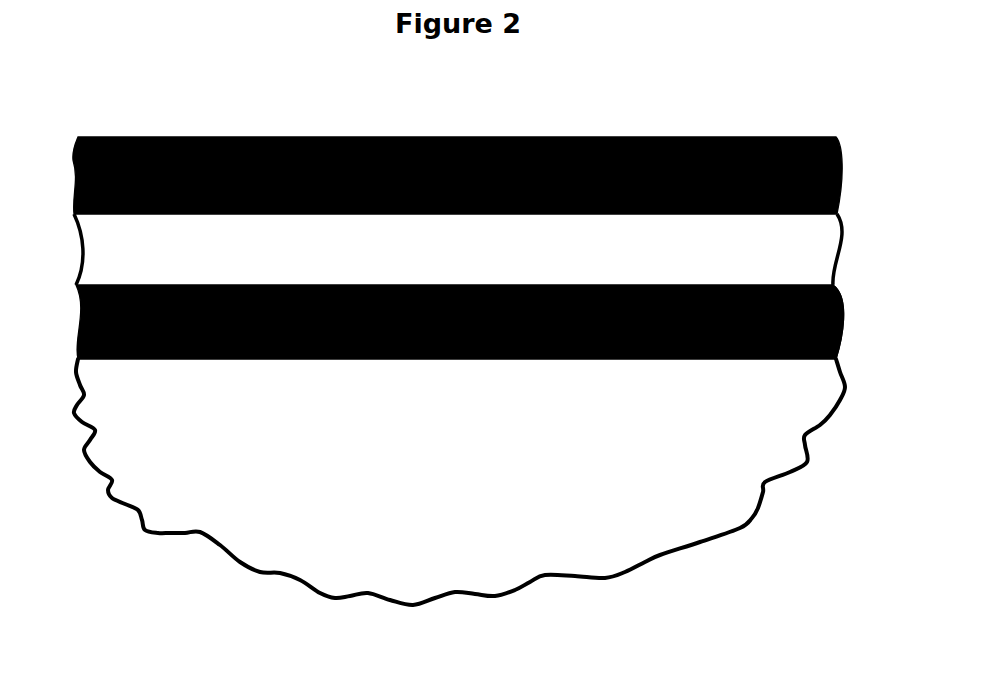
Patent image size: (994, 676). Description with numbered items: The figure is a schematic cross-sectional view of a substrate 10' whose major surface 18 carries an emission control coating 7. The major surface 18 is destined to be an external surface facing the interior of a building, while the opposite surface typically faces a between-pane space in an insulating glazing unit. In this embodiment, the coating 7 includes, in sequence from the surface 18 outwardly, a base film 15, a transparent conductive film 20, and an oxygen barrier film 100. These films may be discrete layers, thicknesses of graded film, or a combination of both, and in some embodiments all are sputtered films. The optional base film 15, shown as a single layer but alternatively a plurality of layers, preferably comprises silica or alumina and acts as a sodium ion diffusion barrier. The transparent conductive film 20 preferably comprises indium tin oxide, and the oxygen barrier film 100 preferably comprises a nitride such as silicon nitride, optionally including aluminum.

The emission control coating 7 is at (87, 110).
The oxygen barrier film 100 is at (473, 188).
The transparent conductive film 20 is at (468, 263).
The base film 15 is at (467, 334).
The major surface 18 is at (841, 330).
The substrate 10' is at (459, 482).